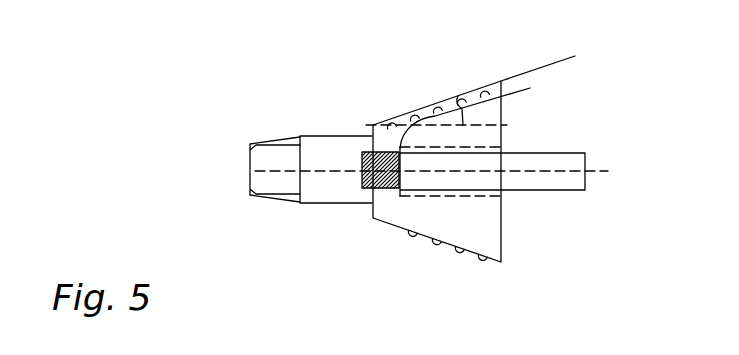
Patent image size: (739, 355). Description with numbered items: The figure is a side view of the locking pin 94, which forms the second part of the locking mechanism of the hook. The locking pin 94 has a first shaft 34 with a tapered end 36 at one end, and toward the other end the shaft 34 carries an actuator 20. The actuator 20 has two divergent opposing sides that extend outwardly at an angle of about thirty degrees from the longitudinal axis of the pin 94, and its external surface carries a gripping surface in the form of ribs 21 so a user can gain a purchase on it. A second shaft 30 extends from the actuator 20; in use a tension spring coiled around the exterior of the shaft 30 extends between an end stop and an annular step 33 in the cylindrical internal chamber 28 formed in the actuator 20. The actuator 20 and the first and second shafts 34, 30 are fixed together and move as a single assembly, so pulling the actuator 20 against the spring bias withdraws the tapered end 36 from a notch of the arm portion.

The actuator 20 is at (468, 235).
The ribs 21 is at (438, 98).
The cylindrical internal chamber 28 is at (369, 151).
The second shaft 30 is at (542, 182).
The annular step 33 is at (483, 113).
The first shaft 34 is at (335, 188).
The tapered end 36 is at (255, 172).
The locking pin 94 is at (466, 76).